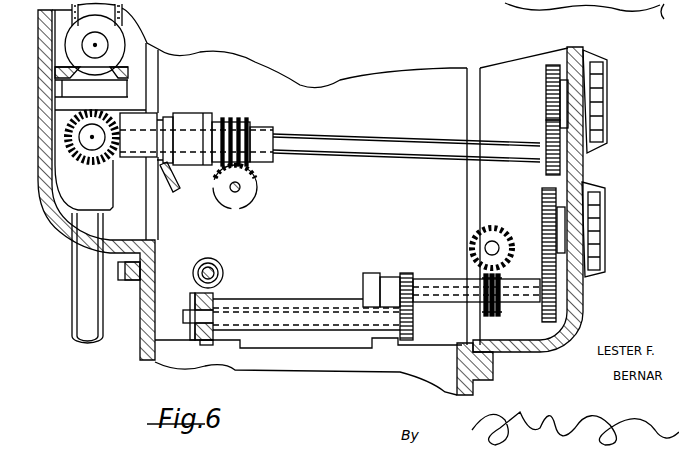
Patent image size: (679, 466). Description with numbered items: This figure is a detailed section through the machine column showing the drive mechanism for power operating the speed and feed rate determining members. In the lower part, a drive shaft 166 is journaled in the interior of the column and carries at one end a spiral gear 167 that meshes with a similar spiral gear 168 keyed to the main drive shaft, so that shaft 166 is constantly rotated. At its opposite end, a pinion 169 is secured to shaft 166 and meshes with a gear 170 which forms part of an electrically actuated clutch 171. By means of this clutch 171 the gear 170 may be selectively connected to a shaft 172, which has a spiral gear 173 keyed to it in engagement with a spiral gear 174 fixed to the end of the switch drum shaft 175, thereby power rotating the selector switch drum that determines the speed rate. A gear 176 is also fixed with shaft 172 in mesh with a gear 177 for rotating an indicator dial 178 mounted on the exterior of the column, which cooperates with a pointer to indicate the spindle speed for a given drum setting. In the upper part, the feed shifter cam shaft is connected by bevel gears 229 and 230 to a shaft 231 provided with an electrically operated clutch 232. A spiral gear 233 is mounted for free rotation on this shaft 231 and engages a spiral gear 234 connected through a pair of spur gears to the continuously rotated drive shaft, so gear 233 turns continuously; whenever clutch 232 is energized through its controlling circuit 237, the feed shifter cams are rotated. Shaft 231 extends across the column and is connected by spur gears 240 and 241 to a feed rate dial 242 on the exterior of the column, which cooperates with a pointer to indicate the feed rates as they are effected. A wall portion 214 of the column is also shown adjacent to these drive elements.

The drive shaft 166 is at (289, 318).
The spiral gear 167 is at (187, 293).
The spiral gear 168 is at (222, 262).
The pinion 169 is at (413, 337).
The gear 170 is at (407, 275).
The electrically actuated clutch 171 is at (390, 276).
The shaft 172 is at (443, 287).
The spiral gear 173 is at (495, 313).
The spiral gear 174 is at (508, 241).
The switch drum shaft 175 is at (489, 243).
The gear 176 is at (548, 347).
The gear 177 is at (556, 188).
The indicator dial 178 is at (606, 183).
The wall 214 is at (158, 200).
The bevel gear 229 is at (66, 153).
The bevel gear 230 is at (84, 185).
The shaft 231 is at (240, 193).
The electrically operated clutch 232 is at (181, 113).
The spiral gear 233 is at (234, 118).
The spiral gear 234 is at (254, 183).
The controlling circuit 237 is at (165, 112).
The spur gear 240 is at (547, 135).
The spur gear 241 is at (547, 79).
The feed rate dial 242 is at (598, 88).